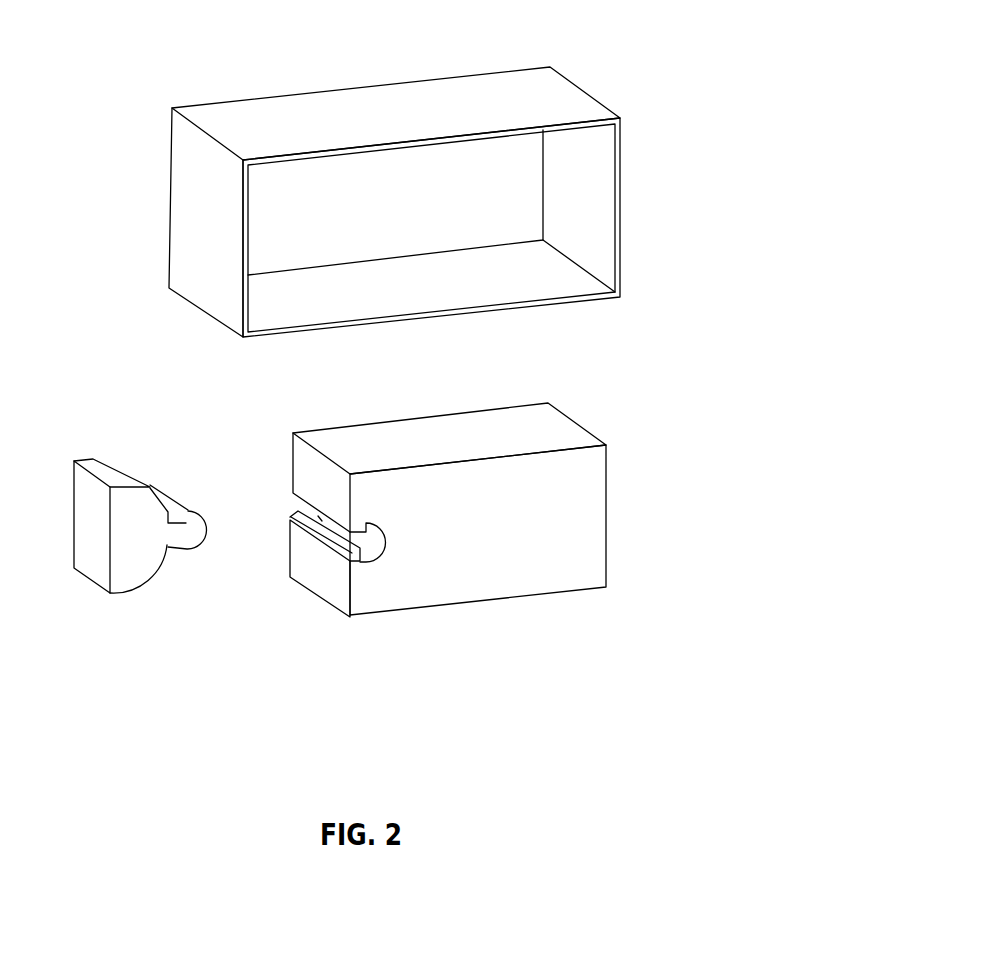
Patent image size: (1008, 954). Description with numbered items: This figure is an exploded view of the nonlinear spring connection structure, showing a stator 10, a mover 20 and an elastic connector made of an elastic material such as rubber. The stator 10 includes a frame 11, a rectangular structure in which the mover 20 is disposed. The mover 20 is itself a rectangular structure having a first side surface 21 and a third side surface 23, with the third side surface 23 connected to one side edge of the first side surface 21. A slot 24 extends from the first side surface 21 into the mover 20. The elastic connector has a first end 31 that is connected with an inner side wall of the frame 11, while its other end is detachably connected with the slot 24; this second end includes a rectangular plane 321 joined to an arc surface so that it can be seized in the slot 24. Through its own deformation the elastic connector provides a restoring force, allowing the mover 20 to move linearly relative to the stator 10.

The stator 10 is at (538, 92).
The frame 11 is at (602, 210).
The mover 20 is at (565, 428).
The first side surface 21 is at (315, 575).
The third side surface 23 is at (557, 565).
The slot 24 is at (382, 552).
The first end 31 is at (92, 560).
The rectangular plane 321 is at (178, 548).